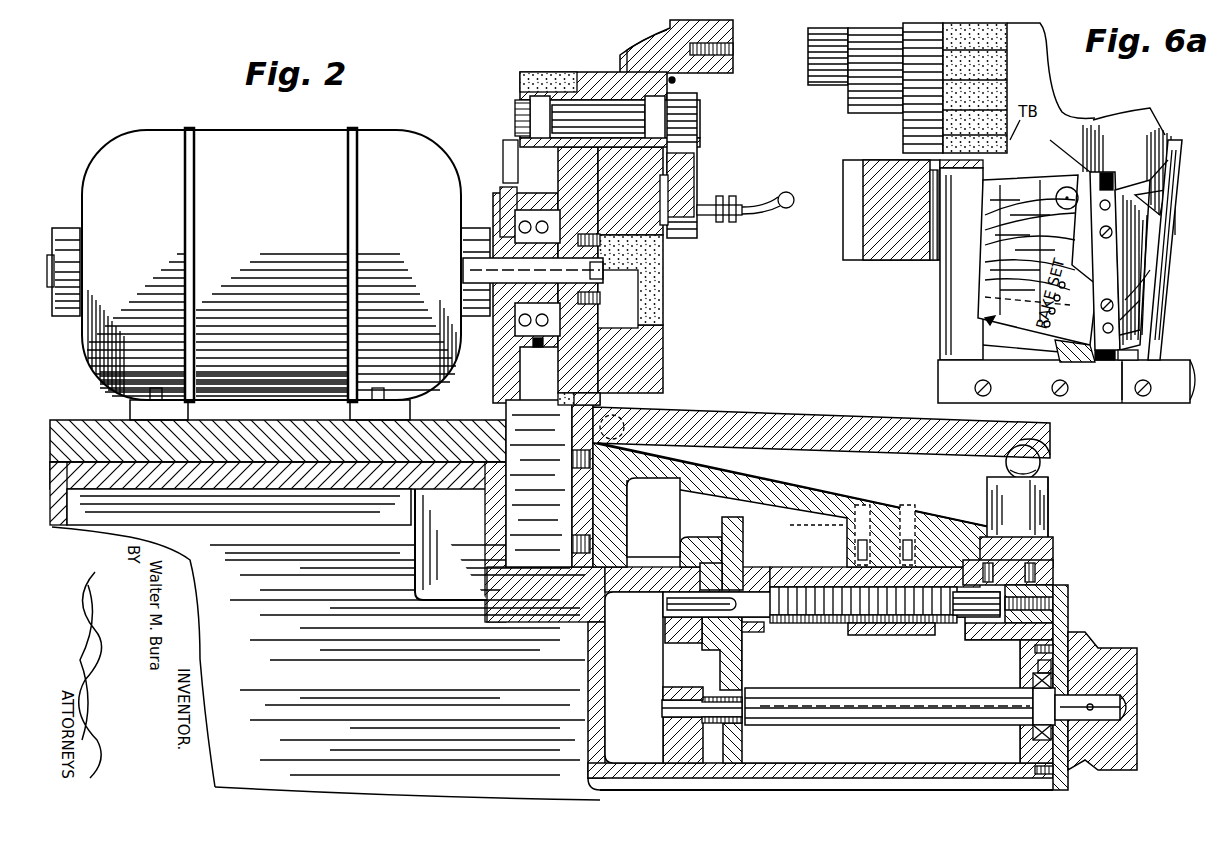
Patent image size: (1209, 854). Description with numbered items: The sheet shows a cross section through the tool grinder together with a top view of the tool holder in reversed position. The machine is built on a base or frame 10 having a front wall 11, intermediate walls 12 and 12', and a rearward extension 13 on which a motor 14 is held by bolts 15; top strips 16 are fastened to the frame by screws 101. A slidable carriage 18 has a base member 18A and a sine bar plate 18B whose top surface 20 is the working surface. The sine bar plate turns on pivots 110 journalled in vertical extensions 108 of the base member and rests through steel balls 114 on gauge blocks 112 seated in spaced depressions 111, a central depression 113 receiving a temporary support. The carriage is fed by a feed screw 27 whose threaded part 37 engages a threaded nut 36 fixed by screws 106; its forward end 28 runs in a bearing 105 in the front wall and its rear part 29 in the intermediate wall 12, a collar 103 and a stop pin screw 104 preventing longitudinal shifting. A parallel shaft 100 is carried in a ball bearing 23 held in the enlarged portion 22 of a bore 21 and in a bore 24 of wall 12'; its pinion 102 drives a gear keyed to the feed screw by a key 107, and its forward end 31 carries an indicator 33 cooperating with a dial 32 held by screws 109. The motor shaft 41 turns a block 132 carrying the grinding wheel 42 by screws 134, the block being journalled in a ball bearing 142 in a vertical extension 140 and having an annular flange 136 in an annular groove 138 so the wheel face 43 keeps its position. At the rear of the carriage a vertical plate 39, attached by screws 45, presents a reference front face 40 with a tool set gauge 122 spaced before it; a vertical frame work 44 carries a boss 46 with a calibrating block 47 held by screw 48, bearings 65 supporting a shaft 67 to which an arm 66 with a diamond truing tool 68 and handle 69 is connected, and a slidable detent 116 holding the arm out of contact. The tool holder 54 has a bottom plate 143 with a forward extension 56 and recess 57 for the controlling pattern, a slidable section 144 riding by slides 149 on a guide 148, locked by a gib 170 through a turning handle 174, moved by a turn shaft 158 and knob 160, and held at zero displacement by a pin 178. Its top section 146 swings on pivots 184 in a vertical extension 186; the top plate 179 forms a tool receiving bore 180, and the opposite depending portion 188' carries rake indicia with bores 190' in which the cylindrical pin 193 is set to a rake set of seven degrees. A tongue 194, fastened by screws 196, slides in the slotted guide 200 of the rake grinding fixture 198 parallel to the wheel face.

In FIG. 2, the base or frame 10 is at (915, 750).
In FIG. 2, the front wall 11 is at (1053, 790).
In FIG. 2, the intermediate wall 12 is at (820, 691).
In FIG. 2, the partial intermediate wall section 12' is at (682, 715).
In FIG. 2, the rearward extension 13 is at (326, 644).
In FIG. 2, the motor 14 is at (268, 265).
In FIG. 2, the bolts 15 is at (270, 404).
In FIG. 6A, the top strips 16 is at (940, 377).
In FIG. 2, the slidable carriage 18 is at (828, 477).
In FIG. 6A, the slidable carriage 18 is at (1190, 388).
In FIG. 2, the base member 18A is at (905, 505).
In FIG. 2, the sine bar plate 18B is at (1050, 440).
In FIG. 6A, the sine bar plate 18B is at (1157, 315).
In FIG. 2, the top surface 20 is at (770, 415).
In FIG. 6A, the top surface 20 is at (1130, 130).
In FIG. 2, the bore 21 is at (1033, 722).
In FIG. 2, the enlarged bore portion 22 is at (1035, 680).
In FIG. 2, the ball bearing 23 is at (1038, 665).
In FIG. 2, the bore 24 is at (665, 692).
In FIG. 2, the feed screw 27 is at (755, 632).
In FIG. 2, the forward end of feed screw 28 is at (975, 618).
In FIG. 2, the rear part of feed screw 29 is at (665, 605).
In FIG. 2, the forward end of shaft 31 is at (1125, 705).
In FIG. 2, the dial 32 is at (1068, 625).
In FIG. 2, the indicator 33 is at (1137, 655).
In FIG. 2, the threaded nut 36 is at (865, 636).
In FIG. 2, the threaded part of feed screw 37 is at (795, 625).
In FIG. 2, the vertical plate 39 is at (575, 495).
In FIG. 2, the front face of vertical plate 40 is at (600, 400).
In FIG. 2, the motor shaft 41 is at (505, 205).
In FIG. 2, the grinding wheel 42 is at (640, 300).
In FIG. 6A, the grinding wheel 42 is at (990, 70).
In FIG. 2, the face of grinding wheel 43 is at (655, 330).
In FIG. 6A, the face of grinding wheel 43 is at (1000, 88).
In FIG. 6A, the vertical frame work 44 is at (870, 240).
In FIG. 2, the screws 45 is at (572, 460).
In FIG. 2, the boss 46 is at (630, 60).
In FIG. 2, the calibrating block 47 is at (733, 28).
In FIG. 2, the screw 48 is at (733, 48).
In FIG. 6A, the tool holder 54 is at (985, 320).
In FIG. 6A, the forward extension 56 is at (1175, 140).
In FIG. 6A, the recess 57 is at (1175, 195).
In FIG. 2, the bearings 65 is at (530, 108).
In FIG. 2, the arm 66 is at (697, 150).
In FIG. 2, the shaft 67 is at (580, 108).
In FIG. 2, the diamond truing tool 68 is at (665, 225).
In FIG. 2, the handle 69 is at (770, 200).
In FIG. 2, the shaft 100 is at (840, 727).
In FIG. 6A, the screws 101 is at (975, 390).
In FIG. 2, the pinion 102 is at (725, 730).
In FIG. 2, the collar 103 is at (760, 598).
In FIG. 2, the stop pin screw 104 is at (1053, 600).
In FIG. 2, the bearing 105 is at (1053, 575).
In FIG. 2, the screws 106 is at (855, 530).
In FIG. 2, the key 107 is at (745, 590).
In FIG. 2, the vertical extensions 108 is at (656, 517).
In FIG. 2, the screws 109 is at (1055, 650).
In FIG. 2, the pivots 110 is at (625, 427).
In FIG. 2, the spaced depressions 111 is at (1055, 550).
In FIG. 2, the gauge blocks 112 is at (1030, 495).
In FIG. 2, the central depression 113 is at (1045, 510).
In FIG. 2, the steel balls 114 is at (1040, 465).
In FIG. 2, the slidable detent 116 is at (550, 72).
In FIG. 2, the tool set gauge 122 is at (690, 175).
In FIG. 2, the block 132 is at (560, 398).
In FIG. 6A, the block 132 is at (905, 118).
In FIG. 2, the screws 134 is at (605, 300).
In FIG. 2, the annular flange 136 is at (565, 180).
In FIG. 2, the annular groove 138 is at (535, 210).
In FIG. 2, the vertical extension 140 is at (500, 215).
In FIG. 6A, the vertical extension 140 is at (835, 85).
In FIG. 2, the ball bearing 142 is at (505, 170).
In FIG. 6A, the bottom plate 143 is at (1144, 280).
In FIG. 6A, the slidable section 144 is at (1130, 250).
In FIG. 6A, the top section 146 is at (1055, 190).
In FIG. 6A, the guide 148 is at (1138, 262).
In FIG. 6A, the slides 149 is at (1160, 325).
In FIG. 6A, the turn shaft 158 is at (1060, 355).
In FIG. 6A, the knob 160 is at (1098, 358).
In FIG. 6A, the gib 170 is at (1140, 300).
In FIG. 6A, the turning handle 174 is at (1134, 389).
In FIG. 6A, the pin 178 is at (1138, 352).
In FIG. 6A, the top plate 179 is at (985, 274).
In FIG. 6A, the tool-receiving bore 180 is at (985, 297).
In FIG. 6A, the pivots 184 is at (985, 212).
In FIG. 6A, the vertical extension 186 is at (1090, 150).
In FIG. 6A, the opposite depending portion 188' is at (1097, 284).
In FIG. 6A, the line 190' is at (979, 345).
In FIG. 6A, the cylindrical pin 193 is at (1011, 260).
In FIG. 6A, the tongue 194 is at (1011, 225).
In FIG. 6A, the screws 196 is at (1010, 243).
In FIG. 6A, the rake grinding fixture 198 is at (1064, 148).
In FIG. 6A, the sunken female slotted guide 200 is at (1106, 172).